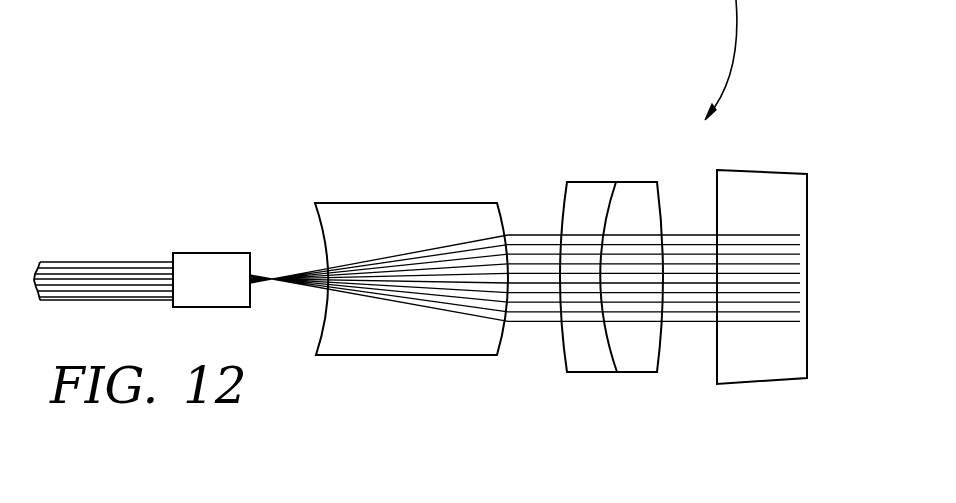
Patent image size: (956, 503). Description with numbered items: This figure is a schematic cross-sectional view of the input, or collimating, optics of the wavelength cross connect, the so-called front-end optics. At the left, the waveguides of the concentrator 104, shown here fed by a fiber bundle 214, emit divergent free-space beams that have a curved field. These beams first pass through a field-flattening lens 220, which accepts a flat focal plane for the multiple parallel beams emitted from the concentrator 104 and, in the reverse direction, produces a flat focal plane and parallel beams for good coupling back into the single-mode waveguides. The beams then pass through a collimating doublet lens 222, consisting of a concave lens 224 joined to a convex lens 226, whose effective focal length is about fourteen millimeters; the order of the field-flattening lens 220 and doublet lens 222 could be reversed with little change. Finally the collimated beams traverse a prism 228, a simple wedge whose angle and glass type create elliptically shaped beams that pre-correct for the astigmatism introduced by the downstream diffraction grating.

The concentrator 104 is at (208, 268).
The optical fiber cable 214 is at (130, 272).
The field-flattening lens 220 is at (370, 215).
The collimating doublet lens 222 is at (621, 215).
The concave lens 224 is at (582, 196).
The convex lens 226 is at (614, 184).
The prism 228 is at (763, 188).